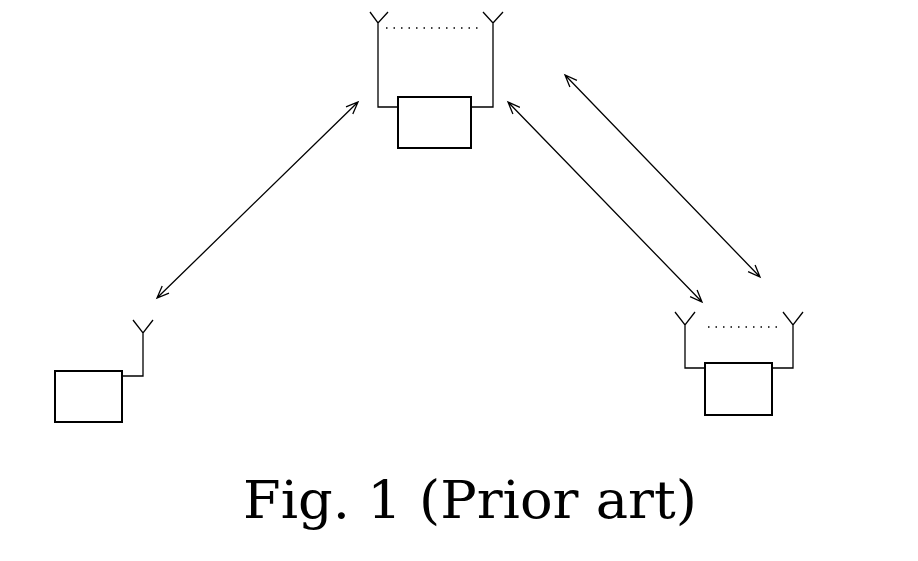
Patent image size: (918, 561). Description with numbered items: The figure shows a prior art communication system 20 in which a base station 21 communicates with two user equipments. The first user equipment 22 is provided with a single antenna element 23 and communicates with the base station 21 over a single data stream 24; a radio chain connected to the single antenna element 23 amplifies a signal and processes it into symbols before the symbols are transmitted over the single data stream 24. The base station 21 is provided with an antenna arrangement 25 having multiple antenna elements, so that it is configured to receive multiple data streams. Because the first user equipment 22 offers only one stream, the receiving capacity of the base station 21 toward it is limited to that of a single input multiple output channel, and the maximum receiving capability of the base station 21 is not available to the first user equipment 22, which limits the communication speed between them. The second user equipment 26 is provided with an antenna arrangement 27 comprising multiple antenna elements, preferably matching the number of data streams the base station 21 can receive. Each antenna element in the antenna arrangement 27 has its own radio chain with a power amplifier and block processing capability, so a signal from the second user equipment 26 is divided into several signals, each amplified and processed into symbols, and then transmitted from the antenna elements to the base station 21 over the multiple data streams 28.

The communication system 20 is at (193, 112).
The base station 21 is at (423, 137).
The first user equipment 22 is at (113, 416).
The single antenna element 23 is at (145, 343).
The single data stream 24 is at (257, 200).
The antenna arrangement 25 is at (527, 13).
The second user equipment 26 is at (740, 408).
The antenna arrangement 27 is at (668, 353).
The data streams 28 is at (634, 188).